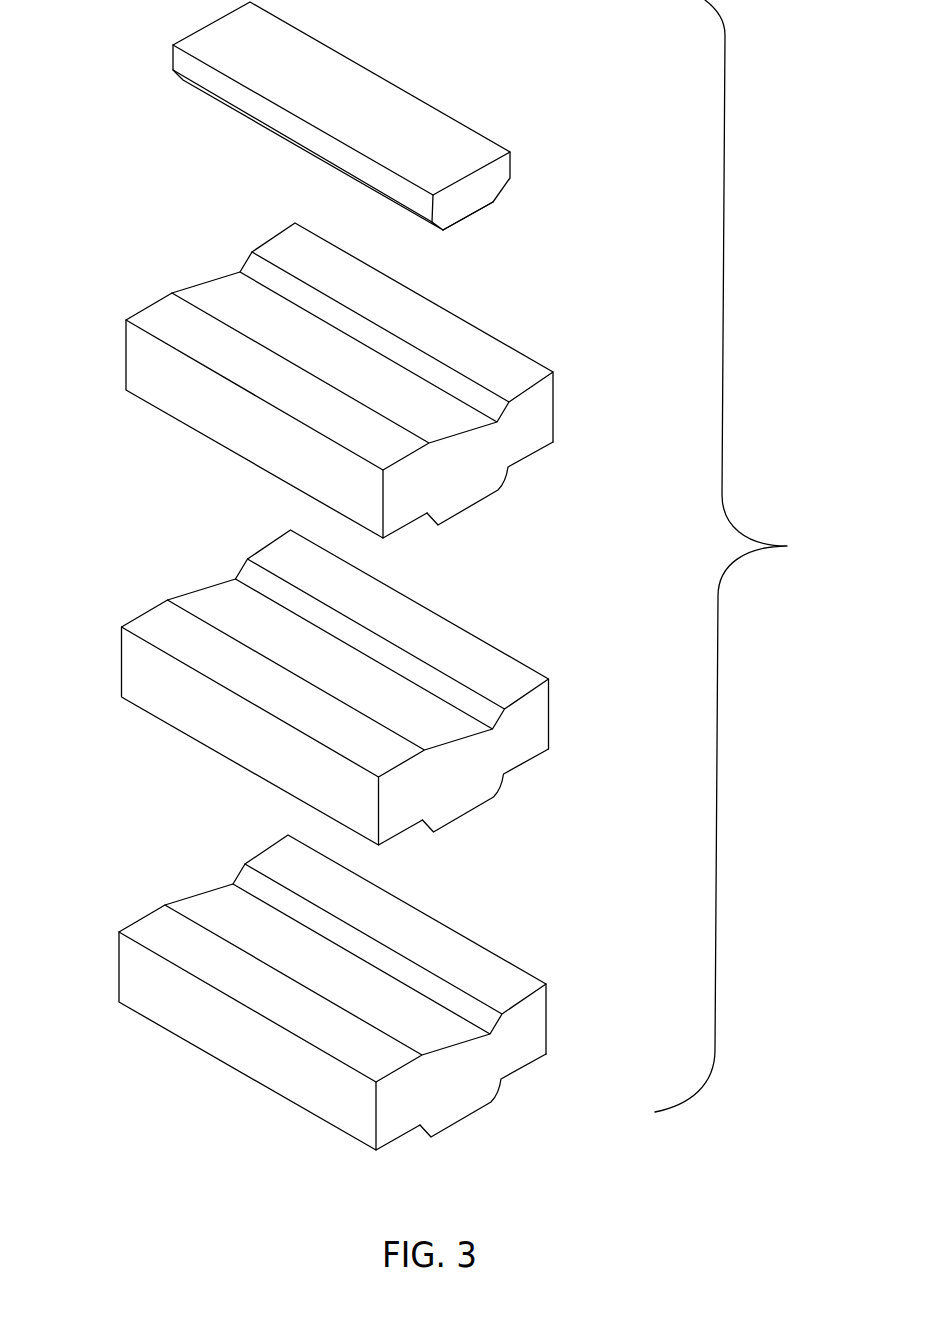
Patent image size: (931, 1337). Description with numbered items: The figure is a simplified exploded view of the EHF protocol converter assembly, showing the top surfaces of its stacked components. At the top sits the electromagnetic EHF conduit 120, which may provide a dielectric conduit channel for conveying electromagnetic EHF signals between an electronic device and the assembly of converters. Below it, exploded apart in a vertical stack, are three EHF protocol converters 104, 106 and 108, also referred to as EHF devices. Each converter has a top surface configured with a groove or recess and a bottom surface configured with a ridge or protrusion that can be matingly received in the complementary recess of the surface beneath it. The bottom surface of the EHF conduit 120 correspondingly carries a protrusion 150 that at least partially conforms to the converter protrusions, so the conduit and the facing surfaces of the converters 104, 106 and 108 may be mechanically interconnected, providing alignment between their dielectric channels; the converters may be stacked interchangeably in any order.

The EHF protocol converter 104 is at (382, 385).
The EHF protocol converter 106 is at (378, 691).
The EHF protocol converter 108 is at (374, 995).
The EHF conduit 120 is at (512, 163).
The protrusion 150 is at (464, 222).